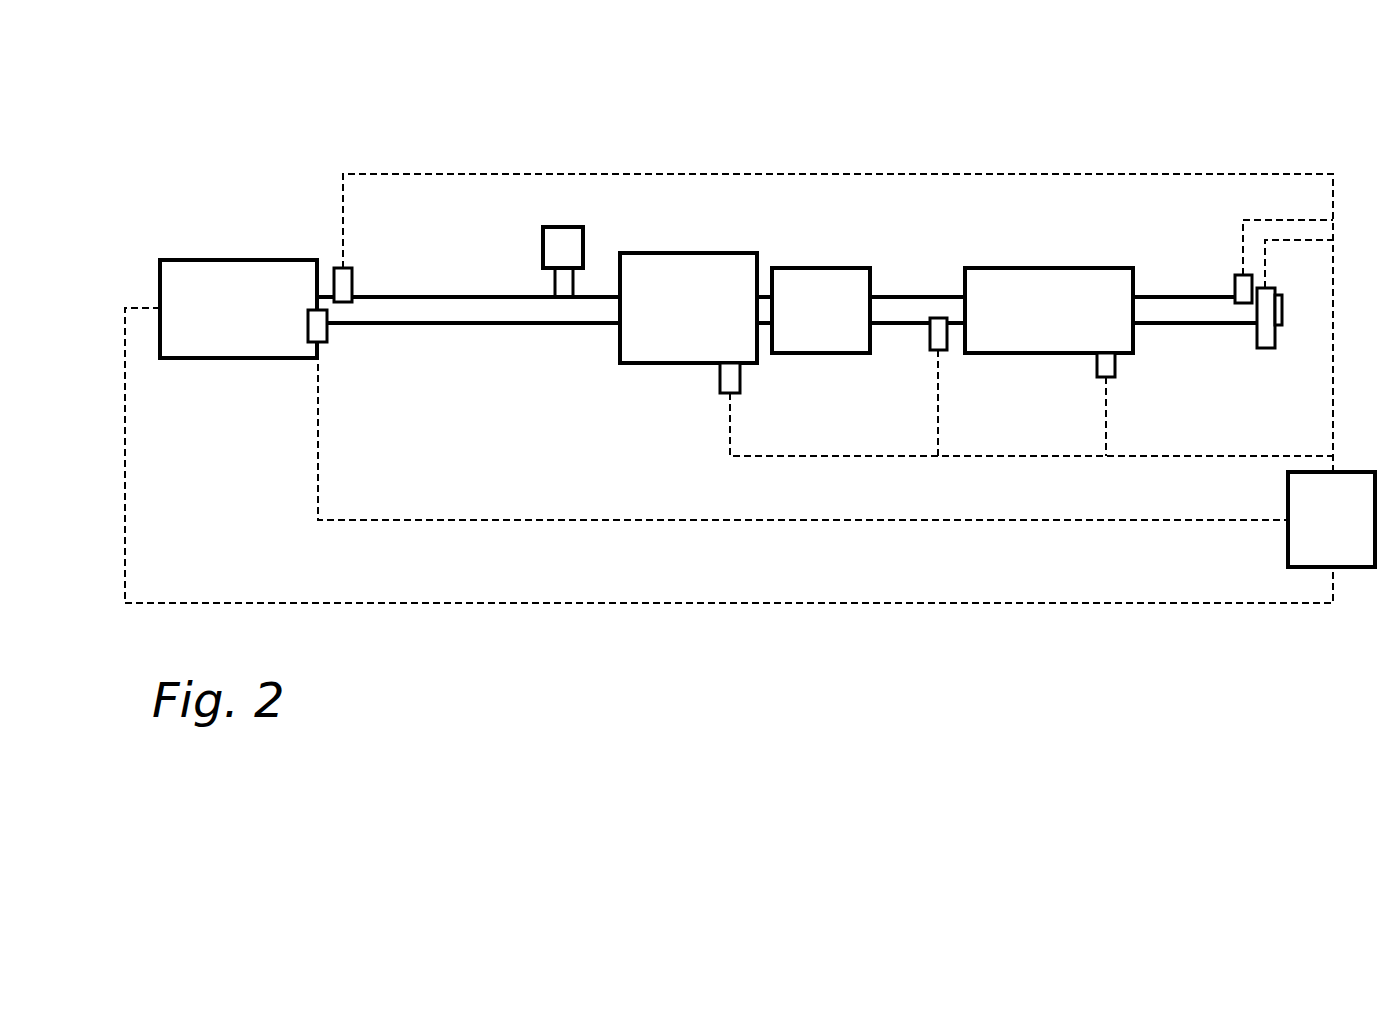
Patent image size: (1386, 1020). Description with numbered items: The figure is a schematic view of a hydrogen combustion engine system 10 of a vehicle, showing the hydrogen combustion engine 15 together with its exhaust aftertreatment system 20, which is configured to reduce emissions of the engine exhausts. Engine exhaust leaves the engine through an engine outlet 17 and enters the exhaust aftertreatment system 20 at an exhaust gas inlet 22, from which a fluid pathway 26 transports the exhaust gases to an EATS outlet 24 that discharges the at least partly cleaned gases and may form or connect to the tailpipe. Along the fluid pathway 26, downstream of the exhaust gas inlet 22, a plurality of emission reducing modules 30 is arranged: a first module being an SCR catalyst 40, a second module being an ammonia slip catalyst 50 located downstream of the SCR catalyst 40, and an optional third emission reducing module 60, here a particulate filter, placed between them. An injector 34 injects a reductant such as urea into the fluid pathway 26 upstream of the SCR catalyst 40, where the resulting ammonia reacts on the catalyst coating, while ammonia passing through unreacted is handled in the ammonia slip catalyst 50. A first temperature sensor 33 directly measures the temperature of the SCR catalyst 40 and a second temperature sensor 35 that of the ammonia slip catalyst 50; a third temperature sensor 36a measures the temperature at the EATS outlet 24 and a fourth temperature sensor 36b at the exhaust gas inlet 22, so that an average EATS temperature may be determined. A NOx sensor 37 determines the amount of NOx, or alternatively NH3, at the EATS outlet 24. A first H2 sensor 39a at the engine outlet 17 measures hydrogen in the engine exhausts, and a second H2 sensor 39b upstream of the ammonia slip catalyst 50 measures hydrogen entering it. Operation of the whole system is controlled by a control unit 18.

The hydrogen combustion engine system 10 is at (1180, 124).
The hydrogen combustion engine 15 is at (258, 260).
The engine outlet 17 is at (340, 335).
The control unit 18 is at (1355, 567).
The exhaust aftertreatment system 20 is at (865, 218).
The exhaust gas inlet 22 is at (320, 292).
The EATS outlet 24 is at (1282, 297).
The fluid pathway 26 is at (462, 233).
The plurality of emission reducing modules 30 is at (612, 412).
The first temperature sensor 33 is at (718, 390).
The injector 34 is at (577, 293).
The second temperature sensor 35 is at (1093, 377).
The third temperature sensor 36a is at (1237, 275).
The fourth temperature sensor 36b is at (350, 267).
The NOx sensor 37 is at (1268, 350).
The first H2 sensor 39a is at (307, 340).
The second H2 sensor 39b is at (928, 348).
The SCR catalyst 40 is at (647, 363).
The ammonia slip catalyst 50 is at (1023, 353).
The third emission reducing module 60 is at (803, 353).